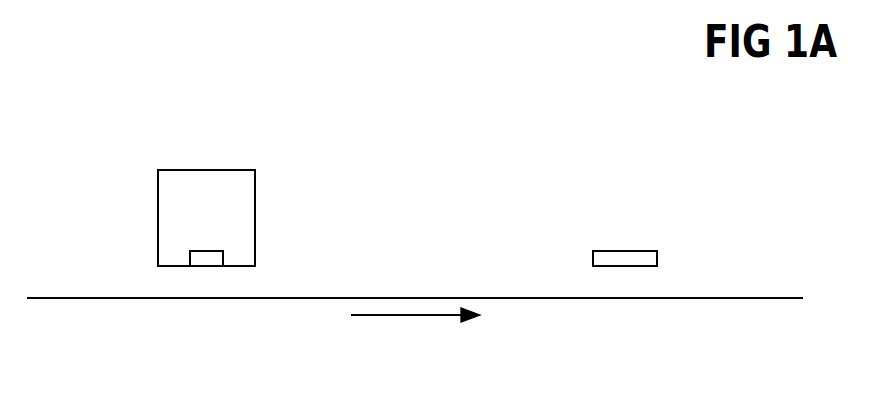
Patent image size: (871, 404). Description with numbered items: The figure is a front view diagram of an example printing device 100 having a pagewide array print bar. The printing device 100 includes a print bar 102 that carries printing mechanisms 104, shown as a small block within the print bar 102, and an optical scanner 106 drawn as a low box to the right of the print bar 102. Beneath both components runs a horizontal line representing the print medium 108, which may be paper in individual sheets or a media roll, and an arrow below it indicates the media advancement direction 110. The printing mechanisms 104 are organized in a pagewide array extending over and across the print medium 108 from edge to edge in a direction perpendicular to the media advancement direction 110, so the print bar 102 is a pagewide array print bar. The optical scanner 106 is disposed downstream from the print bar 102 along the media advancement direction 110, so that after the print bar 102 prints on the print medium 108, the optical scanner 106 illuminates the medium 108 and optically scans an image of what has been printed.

The printing device 100 is at (452, 135).
The print bar 102 is at (217, 170).
The printing mechanisms 104 is at (193, 251).
The optical scanner 106 is at (623, 251).
The print medium 108 is at (115, 299).
The media advancement direction 110 is at (413, 316).